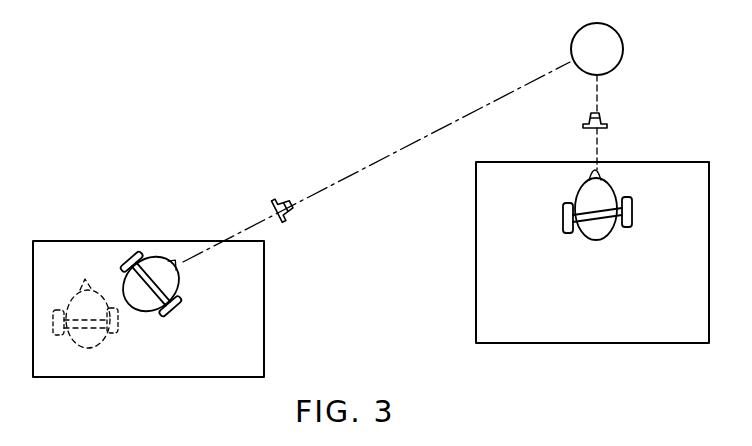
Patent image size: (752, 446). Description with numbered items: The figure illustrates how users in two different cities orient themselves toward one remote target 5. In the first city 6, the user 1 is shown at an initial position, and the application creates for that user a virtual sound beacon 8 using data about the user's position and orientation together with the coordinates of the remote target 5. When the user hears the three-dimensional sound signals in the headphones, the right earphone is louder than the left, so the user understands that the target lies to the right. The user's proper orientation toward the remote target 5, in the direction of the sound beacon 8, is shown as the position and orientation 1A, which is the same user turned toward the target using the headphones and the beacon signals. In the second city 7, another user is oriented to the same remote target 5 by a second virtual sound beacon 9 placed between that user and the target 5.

The user 1 is at (72, 296).
The user's position and orientation 1A is at (152, 256).
The remote target 5 is at (571, 41).
The first city 6 is at (265, 352).
The second city 7 is at (476, 265).
The virtual sound beacon 8 is at (293, 210).
The virtual sound beacon 9 is at (607, 116).